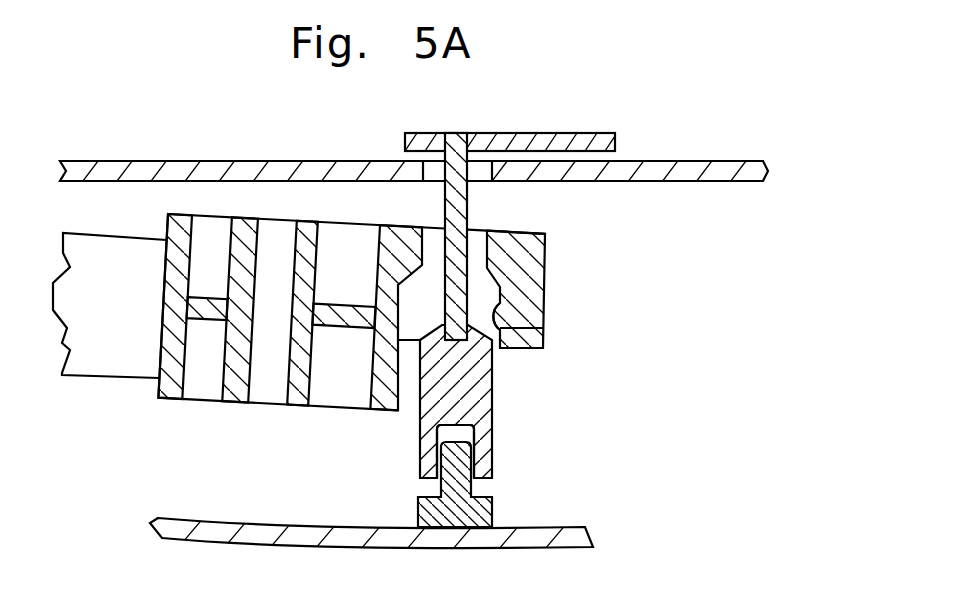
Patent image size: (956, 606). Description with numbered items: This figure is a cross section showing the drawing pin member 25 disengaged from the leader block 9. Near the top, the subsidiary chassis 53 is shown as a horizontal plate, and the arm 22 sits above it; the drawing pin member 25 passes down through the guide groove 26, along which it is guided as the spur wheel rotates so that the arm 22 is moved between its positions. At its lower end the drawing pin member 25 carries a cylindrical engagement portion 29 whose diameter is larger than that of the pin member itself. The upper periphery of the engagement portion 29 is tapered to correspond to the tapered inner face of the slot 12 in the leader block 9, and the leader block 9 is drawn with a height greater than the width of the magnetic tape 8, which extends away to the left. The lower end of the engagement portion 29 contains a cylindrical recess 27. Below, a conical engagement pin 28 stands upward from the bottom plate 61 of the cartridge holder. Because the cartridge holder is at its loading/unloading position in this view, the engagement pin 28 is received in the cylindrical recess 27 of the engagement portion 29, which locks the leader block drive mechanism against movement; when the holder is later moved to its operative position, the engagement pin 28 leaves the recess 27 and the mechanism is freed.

The magnetic tape 8 is at (122, 355).
The leader block 9 is at (527, 283).
The slot 12 is at (502, 330).
The arm 22 is at (512, 133).
The drawing pin member 25 is at (460, 217).
The guide groove 26 is at (428, 161).
The cylindrical recess 27 is at (468, 435).
The engagement pin 28 is at (490, 477).
The engagement portion 29 is at (470, 393).
The subsidiary chassis 53 is at (87, 171).
The bottom plate 61 is at (547, 540).